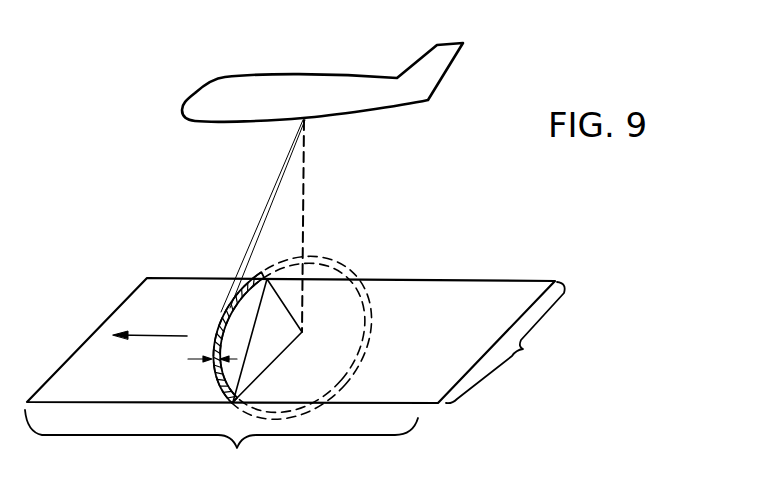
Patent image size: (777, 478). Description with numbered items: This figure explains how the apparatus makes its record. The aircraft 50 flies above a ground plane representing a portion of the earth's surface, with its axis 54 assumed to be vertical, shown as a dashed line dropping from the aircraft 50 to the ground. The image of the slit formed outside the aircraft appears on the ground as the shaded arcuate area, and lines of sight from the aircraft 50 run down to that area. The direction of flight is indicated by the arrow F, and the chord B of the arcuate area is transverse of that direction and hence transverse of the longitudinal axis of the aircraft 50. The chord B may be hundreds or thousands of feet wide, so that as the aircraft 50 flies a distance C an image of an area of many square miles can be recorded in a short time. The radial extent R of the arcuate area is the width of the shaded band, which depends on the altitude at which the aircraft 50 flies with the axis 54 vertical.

The aircraft 50 is at (277, 76).
The axis 54 is at (304, 210).
The arrow indicating direction of flight F is at (150, 327).
The radial extent R is at (212, 363).
The chord of the arcuate area B is at (505, 342).
The distance flown C is at (221, 443).